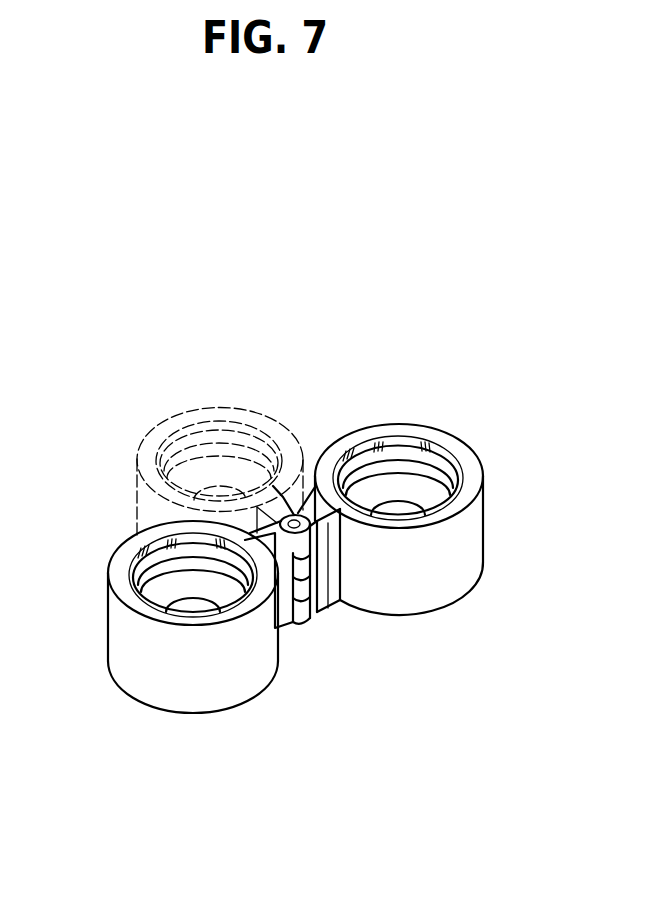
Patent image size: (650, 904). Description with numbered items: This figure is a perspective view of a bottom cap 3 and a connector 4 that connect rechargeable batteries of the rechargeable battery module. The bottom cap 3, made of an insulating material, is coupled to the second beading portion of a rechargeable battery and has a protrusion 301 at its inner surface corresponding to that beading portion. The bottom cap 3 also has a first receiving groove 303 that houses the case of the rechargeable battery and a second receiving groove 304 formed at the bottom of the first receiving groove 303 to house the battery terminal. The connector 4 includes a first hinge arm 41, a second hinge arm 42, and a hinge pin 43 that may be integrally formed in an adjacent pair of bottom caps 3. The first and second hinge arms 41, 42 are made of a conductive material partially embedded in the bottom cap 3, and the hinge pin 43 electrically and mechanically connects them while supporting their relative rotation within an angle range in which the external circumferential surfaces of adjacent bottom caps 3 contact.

The bottom cap 3 is at (170, 722).
The protrusion 301 is at (157, 553).
The first receiving groove 303 is at (153, 588).
The second receiving groove 304 is at (217, 597).
The connector 4 is at (418, 642).
The first hinge arm 41 is at (291, 626).
The second hinge arm 42 is at (340, 604).
The hinge pin 43 is at (322, 612).